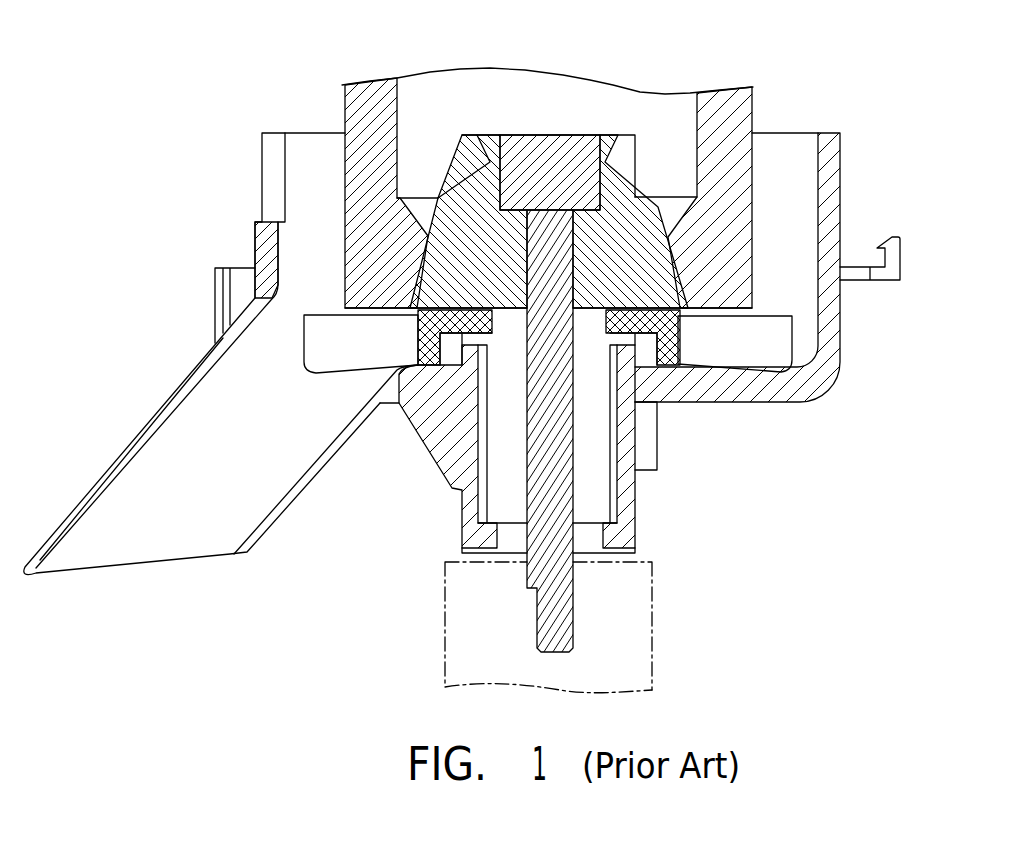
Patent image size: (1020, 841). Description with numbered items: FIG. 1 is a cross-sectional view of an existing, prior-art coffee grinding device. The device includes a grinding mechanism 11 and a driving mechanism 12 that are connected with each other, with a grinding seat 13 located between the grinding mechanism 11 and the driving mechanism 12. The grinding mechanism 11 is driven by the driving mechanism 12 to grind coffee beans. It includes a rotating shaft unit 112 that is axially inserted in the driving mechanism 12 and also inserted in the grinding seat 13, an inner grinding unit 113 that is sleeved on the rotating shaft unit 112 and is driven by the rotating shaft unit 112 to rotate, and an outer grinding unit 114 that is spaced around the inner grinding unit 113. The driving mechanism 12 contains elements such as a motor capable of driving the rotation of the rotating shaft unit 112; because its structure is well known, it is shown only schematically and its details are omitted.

The grinding mechanism 11 is at (642, 92).
The rotating shaft unit 112 is at (542, 501).
The inner grinding unit 113 is at (467, 203).
The outer grinding unit 114 is at (377, 250).
The driving mechanism 12 is at (622, 619).
The grinding seat 13 is at (749, 393).